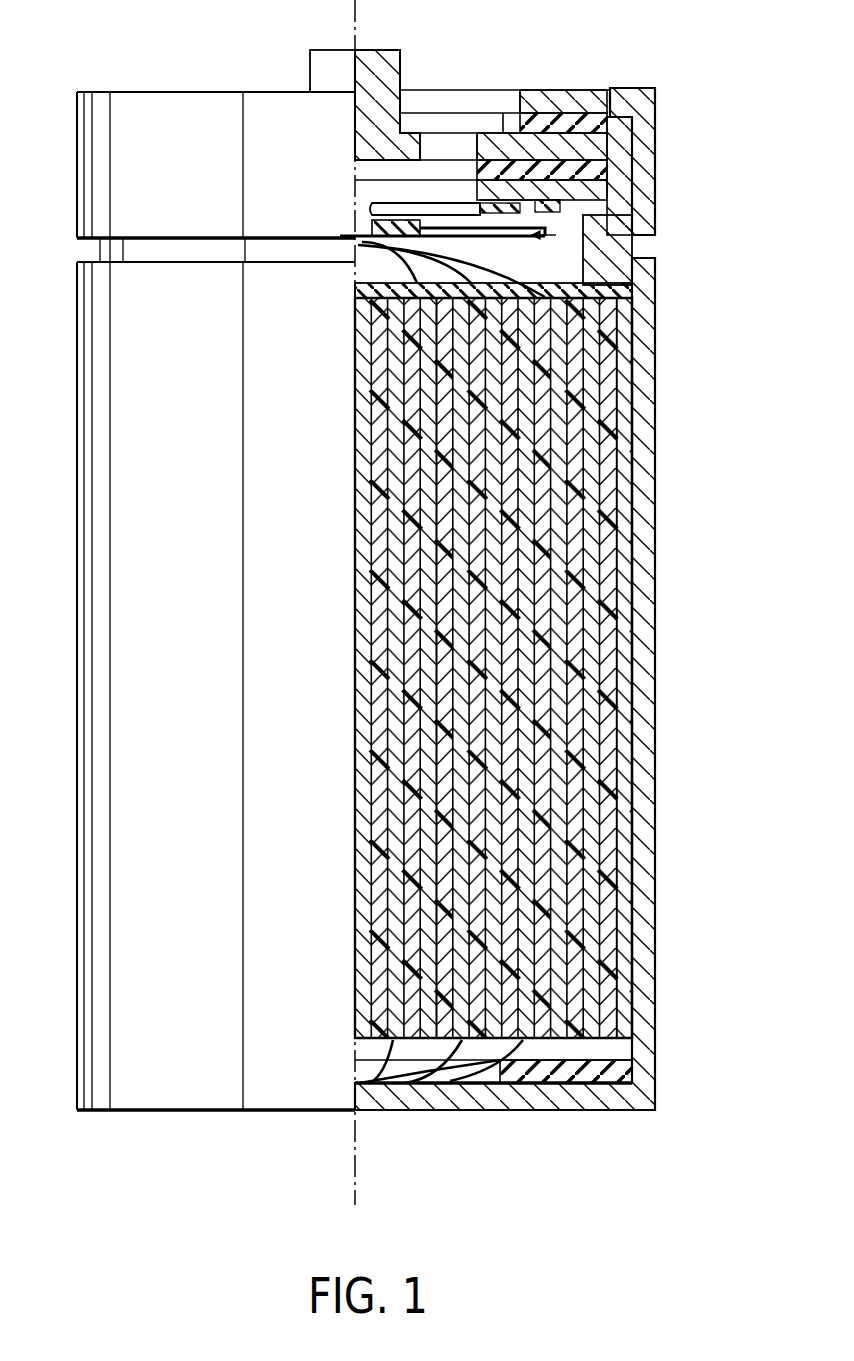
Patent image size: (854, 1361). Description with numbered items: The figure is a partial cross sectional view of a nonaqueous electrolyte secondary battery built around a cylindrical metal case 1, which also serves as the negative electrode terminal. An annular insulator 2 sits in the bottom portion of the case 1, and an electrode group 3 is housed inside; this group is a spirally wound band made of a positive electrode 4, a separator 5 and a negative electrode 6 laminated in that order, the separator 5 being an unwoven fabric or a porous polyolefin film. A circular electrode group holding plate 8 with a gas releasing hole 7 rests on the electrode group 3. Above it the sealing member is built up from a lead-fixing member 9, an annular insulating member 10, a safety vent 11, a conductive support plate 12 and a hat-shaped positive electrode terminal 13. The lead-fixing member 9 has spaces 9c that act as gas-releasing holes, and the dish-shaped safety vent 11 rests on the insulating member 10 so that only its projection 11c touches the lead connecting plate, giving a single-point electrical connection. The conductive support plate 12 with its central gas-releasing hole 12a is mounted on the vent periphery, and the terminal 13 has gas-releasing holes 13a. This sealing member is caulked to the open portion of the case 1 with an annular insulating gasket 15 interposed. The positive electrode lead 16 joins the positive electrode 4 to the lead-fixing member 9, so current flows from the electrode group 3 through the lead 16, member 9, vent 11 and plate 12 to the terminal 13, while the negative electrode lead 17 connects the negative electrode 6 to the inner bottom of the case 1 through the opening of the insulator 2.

The case 1 is at (648, 770).
The annular insulator 2 is at (597, 1072).
The electrode group 3 is at (549, 668).
The positive electrode 4 is at (560, 455).
The separator 5 is at (573, 492).
The negative electrode 6 is at (600, 545).
The gas releasing hole 7 is at (575, 325).
The electrode group holding plate 8 is at (634, 292).
The lead-fixing member 9 is at (610, 262).
The spaces 9c is at (356, 268).
The annular insulating member 10 is at (655, 228).
The safety vent 11 is at (618, 192).
The projection 11c is at (350, 222).
The conductive support plate 12 is at (598, 167).
The gas-releasing hole 12a is at (467, 170).
The positive electrode terminal 13 is at (375, 52).
The gas-releasing holes 13a is at (443, 150).
The annular insulating gasket 15 is at (578, 120).
The positive electrode lead 16 is at (440, 318).
The negative electrode lead 17 is at (467, 1083).